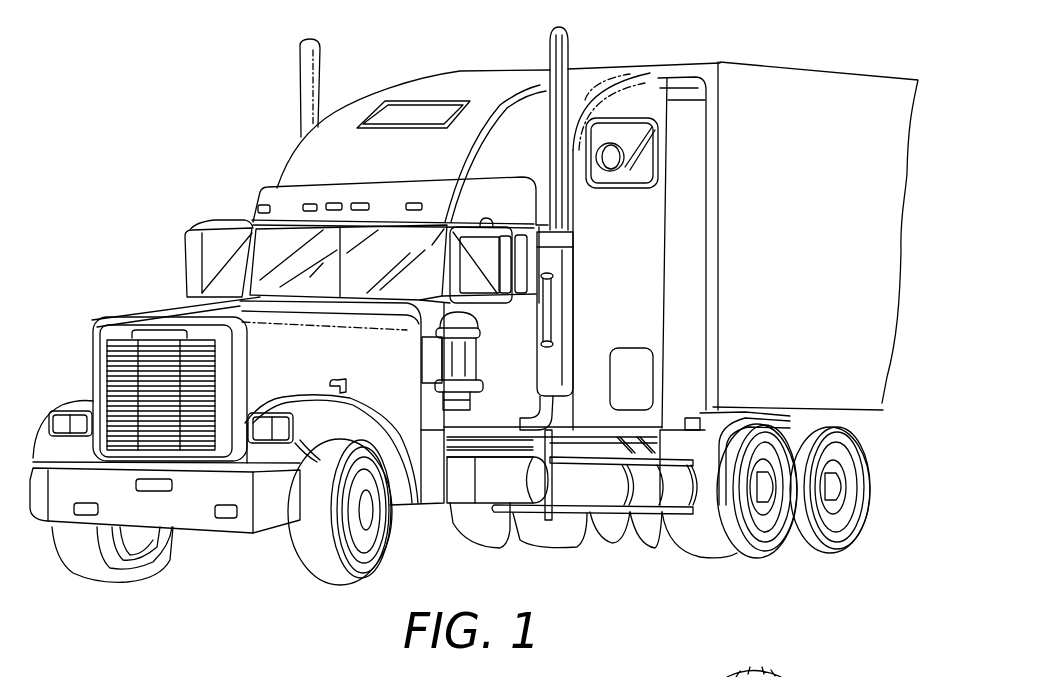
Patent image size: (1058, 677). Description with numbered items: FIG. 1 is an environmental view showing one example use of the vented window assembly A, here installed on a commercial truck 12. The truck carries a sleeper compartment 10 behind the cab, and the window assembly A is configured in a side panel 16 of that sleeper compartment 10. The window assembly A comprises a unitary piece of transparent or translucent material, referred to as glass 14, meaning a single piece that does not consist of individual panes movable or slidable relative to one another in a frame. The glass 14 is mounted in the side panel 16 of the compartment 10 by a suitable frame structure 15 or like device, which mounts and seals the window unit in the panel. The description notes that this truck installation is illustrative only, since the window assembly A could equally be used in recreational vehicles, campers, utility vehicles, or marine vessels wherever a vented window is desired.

The sleeper compartment 10 is at (497, 82).
The commercial truck 12 is at (122, 312).
The glass 14 is at (640, 170).
The frame structure 15 is at (667, 111).
The side panel 16 is at (628, 93).
The vented window assembly A is at (634, 195).